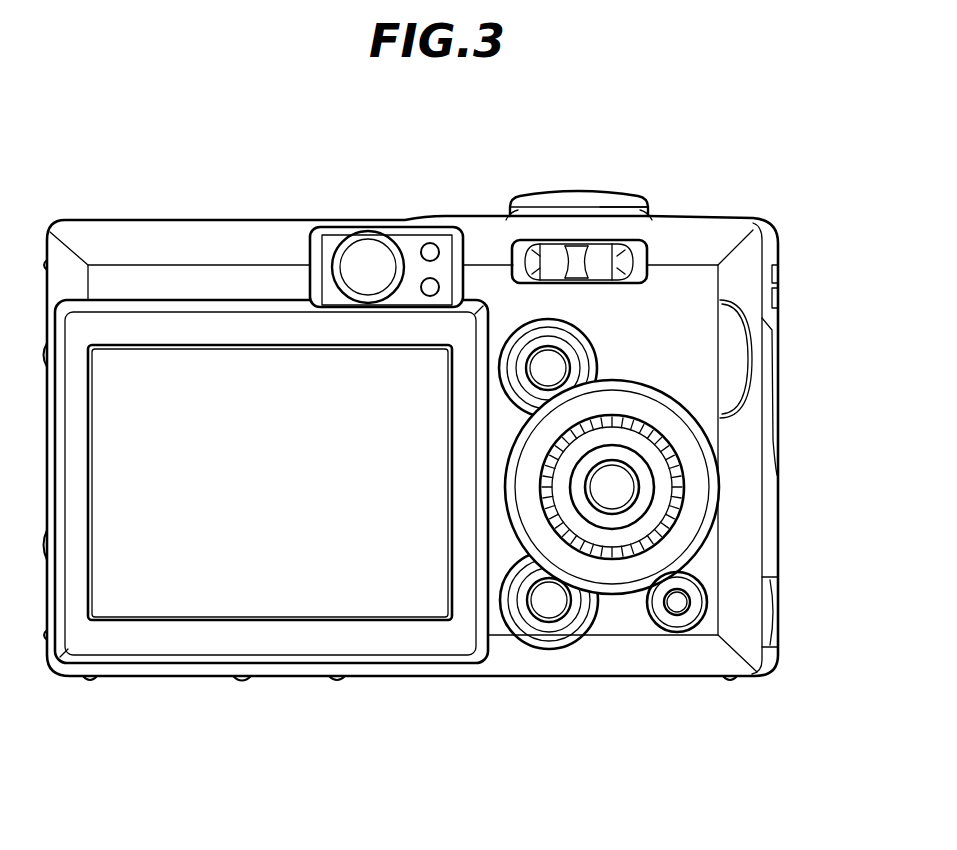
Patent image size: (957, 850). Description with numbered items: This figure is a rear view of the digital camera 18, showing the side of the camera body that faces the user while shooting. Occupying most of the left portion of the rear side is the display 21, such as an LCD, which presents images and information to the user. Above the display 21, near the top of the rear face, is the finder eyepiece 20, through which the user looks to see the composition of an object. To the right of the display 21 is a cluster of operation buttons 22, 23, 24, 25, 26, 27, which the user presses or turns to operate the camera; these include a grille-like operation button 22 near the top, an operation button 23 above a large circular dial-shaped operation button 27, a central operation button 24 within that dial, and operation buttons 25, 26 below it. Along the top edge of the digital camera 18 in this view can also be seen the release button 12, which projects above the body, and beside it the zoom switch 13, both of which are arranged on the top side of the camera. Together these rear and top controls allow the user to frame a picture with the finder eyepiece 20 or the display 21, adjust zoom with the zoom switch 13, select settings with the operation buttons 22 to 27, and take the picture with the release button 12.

The release button 12 is at (577, 192).
The zoom switch 13 is at (630, 208).
The digital camera 18 is at (181, 237).
The finder eyepiece 20 is at (365, 252).
The display 21 is at (352, 600).
The operation button 22 is at (610, 250).
The operation button 23 is at (557, 362).
The operation button 24 is at (613, 490).
The operation button 25 is at (547, 605).
The operation button 26 is at (675, 607).
The operation button 27 is at (672, 515).